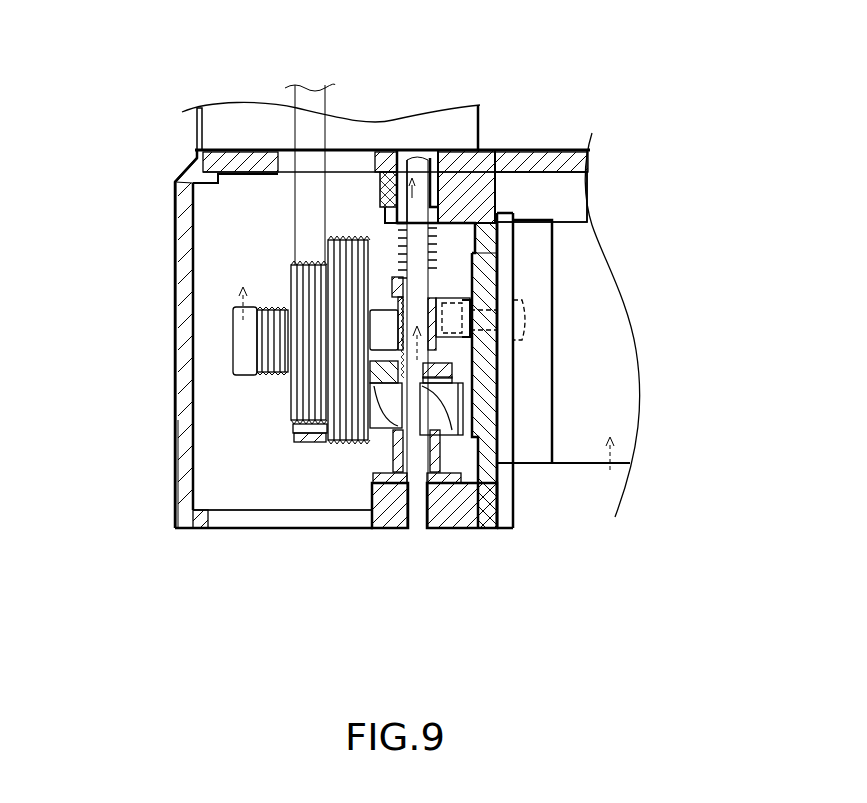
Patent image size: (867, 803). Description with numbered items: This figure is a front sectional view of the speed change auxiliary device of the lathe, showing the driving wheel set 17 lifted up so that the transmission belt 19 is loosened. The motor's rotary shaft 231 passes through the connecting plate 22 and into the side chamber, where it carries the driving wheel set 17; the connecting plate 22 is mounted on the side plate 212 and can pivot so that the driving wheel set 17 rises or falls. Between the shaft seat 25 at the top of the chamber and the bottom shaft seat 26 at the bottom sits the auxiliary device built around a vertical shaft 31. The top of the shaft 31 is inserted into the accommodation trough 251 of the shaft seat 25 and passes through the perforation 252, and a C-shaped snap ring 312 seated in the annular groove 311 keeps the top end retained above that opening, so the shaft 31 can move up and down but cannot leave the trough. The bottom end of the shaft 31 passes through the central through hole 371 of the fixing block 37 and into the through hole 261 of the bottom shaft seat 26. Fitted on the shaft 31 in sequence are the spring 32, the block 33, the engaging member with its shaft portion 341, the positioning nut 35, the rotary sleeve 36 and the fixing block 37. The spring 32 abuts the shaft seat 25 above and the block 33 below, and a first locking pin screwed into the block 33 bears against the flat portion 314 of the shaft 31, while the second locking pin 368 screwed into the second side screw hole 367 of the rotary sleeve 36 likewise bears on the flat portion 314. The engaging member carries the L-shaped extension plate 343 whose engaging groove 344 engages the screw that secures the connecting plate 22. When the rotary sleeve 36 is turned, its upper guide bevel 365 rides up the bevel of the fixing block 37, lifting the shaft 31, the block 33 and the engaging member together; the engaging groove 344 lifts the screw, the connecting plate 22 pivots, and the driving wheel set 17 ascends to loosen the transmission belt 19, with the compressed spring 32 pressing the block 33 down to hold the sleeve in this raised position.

The driving wheel set 17 is at (276, 308).
The transmission belt 19 is at (310, 212).
The connecting plate 22 is at (530, 370).
The shaft seat 25 is at (593, 147).
The bottom shaft seat 26 is at (437, 507).
The shaft 31 is at (493, 150).
The spring 32 is at (470, 200).
The block 33 is at (498, 237).
The positioning nut 35 is at (360, 357).
The rotary sleeve 36 is at (293, 443).
The fixing block 37 is at (513, 528).
The side plate 212 is at (514, 470).
The rotary shaft 231 is at (392, 446).
The accommodation trough 251 is at (350, 150).
The perforation 252 is at (190, 150).
The through hole 261 is at (417, 508).
The annular groove 311 is at (356, 306).
The C-shaped snap ring 312 is at (527, 88).
The flat portion 314 is at (505, 395).
The shaft portion 341 is at (390, 297).
The extension plate 343 is at (455, 300).
The engaging groove 344 is at (520, 325).
The upper guide bevel 365 is at (350, 440).
The second side screw hole 367 is at (484, 368).
The second locking pin 368 is at (487, 350).
The central through hole 371 is at (373, 475).